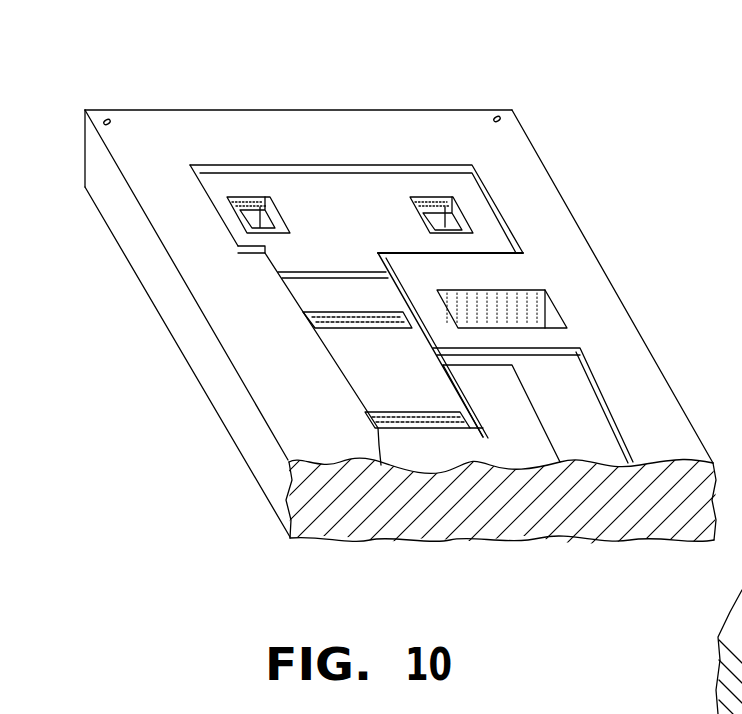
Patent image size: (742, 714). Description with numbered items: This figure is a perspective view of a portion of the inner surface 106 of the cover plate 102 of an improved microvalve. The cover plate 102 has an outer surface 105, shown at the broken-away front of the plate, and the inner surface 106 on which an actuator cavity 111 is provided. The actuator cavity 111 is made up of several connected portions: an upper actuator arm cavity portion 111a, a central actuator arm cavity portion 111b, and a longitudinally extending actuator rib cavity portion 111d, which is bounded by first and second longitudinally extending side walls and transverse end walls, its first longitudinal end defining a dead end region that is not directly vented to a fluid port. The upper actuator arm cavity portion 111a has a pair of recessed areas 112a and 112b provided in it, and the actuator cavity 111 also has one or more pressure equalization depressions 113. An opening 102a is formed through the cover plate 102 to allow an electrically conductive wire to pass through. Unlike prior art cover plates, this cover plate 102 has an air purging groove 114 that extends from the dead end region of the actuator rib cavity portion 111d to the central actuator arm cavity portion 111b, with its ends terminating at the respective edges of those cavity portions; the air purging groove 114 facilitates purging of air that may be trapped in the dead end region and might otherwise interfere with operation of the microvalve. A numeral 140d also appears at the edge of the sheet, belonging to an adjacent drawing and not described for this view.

The cover plate 102 is at (370, 110).
The outer surface 105 is at (472, 540).
The inner surface 106 is at (463, 122).
The actuator cavity 111 is at (350, 188).
The upper actuator arm cavity portion 111a is at (290, 252).
The central actuator arm cavity portion 111b is at (372, 382).
The longitudinally extending actuator rib cavity portion 111d is at (567, 393).
The recessed area 112a is at (255, 213).
The recessed area 112b is at (438, 225).
The pressure equalization depression 113 is at (335, 317).
The air purging groove 114 is at (488, 362).
The opening 102a is at (510, 300).
The member 140d is at (741, 558).